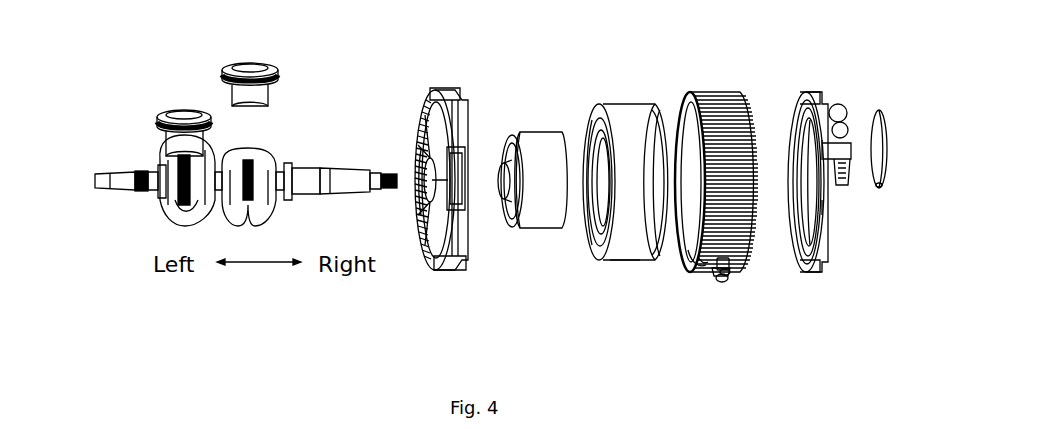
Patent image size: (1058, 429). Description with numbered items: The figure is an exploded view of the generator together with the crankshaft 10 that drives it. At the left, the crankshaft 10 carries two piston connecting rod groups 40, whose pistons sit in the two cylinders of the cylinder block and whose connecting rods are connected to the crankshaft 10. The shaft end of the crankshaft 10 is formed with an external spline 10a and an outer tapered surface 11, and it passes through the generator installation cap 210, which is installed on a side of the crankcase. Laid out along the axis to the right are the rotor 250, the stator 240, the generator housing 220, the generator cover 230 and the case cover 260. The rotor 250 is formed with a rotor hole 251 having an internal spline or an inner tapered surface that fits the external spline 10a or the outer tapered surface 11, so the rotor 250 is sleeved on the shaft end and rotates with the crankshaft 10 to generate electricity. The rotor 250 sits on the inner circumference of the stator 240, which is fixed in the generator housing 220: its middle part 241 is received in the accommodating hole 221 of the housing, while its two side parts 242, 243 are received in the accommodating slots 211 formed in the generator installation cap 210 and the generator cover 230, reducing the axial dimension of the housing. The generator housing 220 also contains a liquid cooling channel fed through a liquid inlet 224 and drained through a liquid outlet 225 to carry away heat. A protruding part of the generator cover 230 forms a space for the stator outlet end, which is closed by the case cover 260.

The crankshaft 10 is at (110, 172).
The external spline 10a is at (392, 170).
The outer tapered surface 11 is at (348, 168).
The piston connecting rod group 40 is at (162, 113).
The generator installation cap 210 is at (460, 94).
The accommodating slot 211 is at (417, 197).
The generator housing 220 is at (722, 92).
The accommodating hole 221 is at (698, 262).
The liquid inlet 224 is at (733, 277).
The liquid outlet 225 is at (716, 288).
The generator cover 230 is at (815, 92).
The stator 240 is at (636, 102).
The middle part 241 is at (628, 256).
The side part 242 is at (595, 254).
The side part 243 is at (663, 113).
The rotor 250 is at (540, 130).
The rotor hole 251 is at (497, 196).
The case cover 260 is at (884, 112).